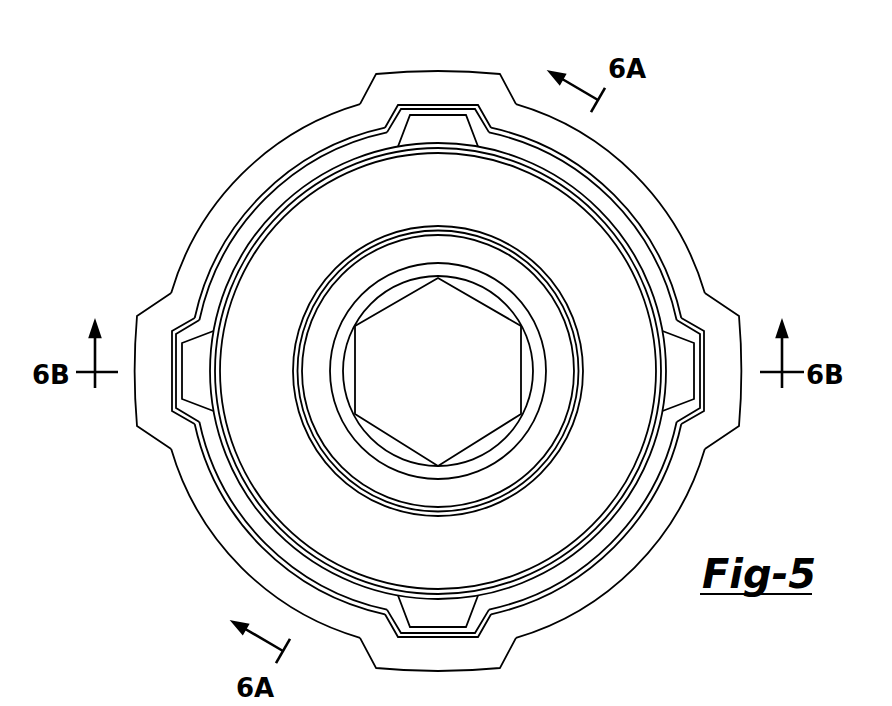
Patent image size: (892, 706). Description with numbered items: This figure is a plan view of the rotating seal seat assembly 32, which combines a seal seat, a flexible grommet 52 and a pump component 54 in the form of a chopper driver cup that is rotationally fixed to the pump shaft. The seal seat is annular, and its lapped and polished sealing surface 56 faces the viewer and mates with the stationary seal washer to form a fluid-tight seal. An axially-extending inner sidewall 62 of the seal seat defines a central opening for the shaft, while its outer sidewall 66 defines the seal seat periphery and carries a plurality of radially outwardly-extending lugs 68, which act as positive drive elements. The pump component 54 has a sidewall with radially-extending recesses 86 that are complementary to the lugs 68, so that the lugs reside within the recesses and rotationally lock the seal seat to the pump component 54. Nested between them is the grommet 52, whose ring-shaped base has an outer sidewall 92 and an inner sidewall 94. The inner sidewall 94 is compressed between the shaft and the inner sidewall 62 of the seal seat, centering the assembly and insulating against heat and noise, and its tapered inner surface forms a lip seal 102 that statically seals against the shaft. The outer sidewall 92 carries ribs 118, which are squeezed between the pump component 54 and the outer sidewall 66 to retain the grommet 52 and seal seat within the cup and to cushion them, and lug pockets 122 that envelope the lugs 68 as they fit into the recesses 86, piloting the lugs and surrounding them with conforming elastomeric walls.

The rotating seal seat assembly 32 is at (671, 100).
The flexible grommet 52 is at (598, 192).
The pump component 54 is at (262, 180).
The sealing surface 56 is at (343, 192).
The inner sidewall 62 is at (312, 322).
The outer sidewall 66 is at (241, 474).
The lugs 68 is at (194, 381).
The recesses 86 is at (468, 99).
The outer sidewall 92 is at (624, 210).
The inner sidewall 94 is at (497, 252).
The lip seal 102 is at (513, 309).
The ribs 118 is at (651, 238).
The lug pockets 122 is at (707, 356).